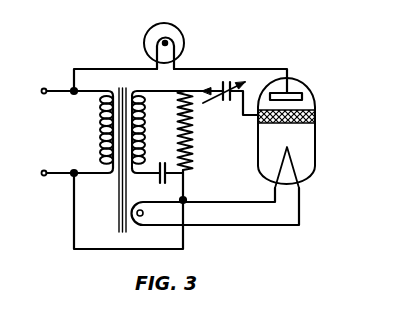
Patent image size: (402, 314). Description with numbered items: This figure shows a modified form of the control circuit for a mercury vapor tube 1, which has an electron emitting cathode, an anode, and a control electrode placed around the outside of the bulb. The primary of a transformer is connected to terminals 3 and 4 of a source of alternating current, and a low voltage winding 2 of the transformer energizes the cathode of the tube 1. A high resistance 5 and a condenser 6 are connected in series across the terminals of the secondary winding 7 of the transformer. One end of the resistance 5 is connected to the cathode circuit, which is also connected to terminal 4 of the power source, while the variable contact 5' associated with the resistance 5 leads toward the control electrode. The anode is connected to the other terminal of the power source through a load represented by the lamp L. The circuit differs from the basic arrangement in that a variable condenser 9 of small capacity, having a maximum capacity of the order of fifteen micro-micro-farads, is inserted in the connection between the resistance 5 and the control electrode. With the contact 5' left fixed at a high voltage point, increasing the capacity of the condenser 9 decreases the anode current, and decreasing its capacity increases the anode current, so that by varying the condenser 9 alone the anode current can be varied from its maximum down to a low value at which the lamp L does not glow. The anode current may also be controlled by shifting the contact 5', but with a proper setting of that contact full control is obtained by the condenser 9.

The mercury vapor tube 1 is at (304, 84).
The low voltage winding 2 is at (144, 214).
The terminal 3 is at (50, 92).
The terminal 4 is at (49, 174).
The high resistance 5 is at (196, 130).
The variable contact 5' is at (224, 73).
The condenser 6 is at (157, 183).
The secondary winding 7 is at (147, 129).
The variable condenser 9 is at (216, 103).
The lamp L is at (180, 26).